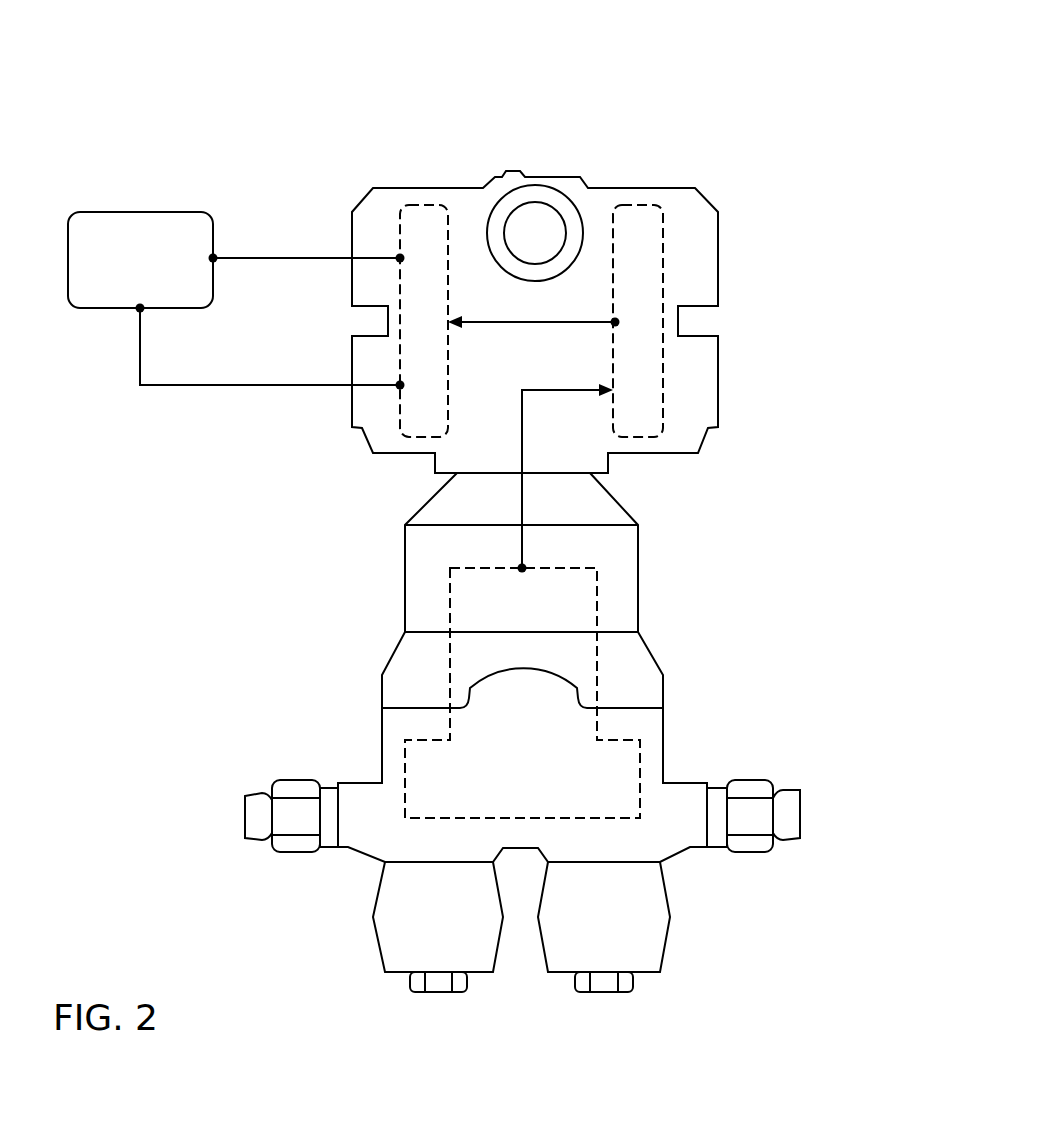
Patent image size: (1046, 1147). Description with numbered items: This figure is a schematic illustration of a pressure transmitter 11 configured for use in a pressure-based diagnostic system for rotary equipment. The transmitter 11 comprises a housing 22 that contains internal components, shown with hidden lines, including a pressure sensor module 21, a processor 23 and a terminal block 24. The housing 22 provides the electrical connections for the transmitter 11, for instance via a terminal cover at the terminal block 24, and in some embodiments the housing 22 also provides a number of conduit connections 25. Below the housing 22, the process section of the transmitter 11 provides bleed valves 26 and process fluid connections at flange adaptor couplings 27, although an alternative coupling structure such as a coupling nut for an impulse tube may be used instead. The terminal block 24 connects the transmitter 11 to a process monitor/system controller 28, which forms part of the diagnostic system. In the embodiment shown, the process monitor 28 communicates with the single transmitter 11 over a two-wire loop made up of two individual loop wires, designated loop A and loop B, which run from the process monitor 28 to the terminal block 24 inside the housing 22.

The pressure transmitter 11 is at (838, 88).
The pressure sensor module 21 is at (460, 672).
The housing 22 is at (398, 188).
The processor 23 is at (652, 265).
The terminal block 24 is at (433, 220).
The conduit connections 25 is at (548, 188).
The bleed valves 26 is at (253, 838).
The flange adaptor couplings 27 is at (458, 933).
The process monitor/system controller 28 is at (108, 212).